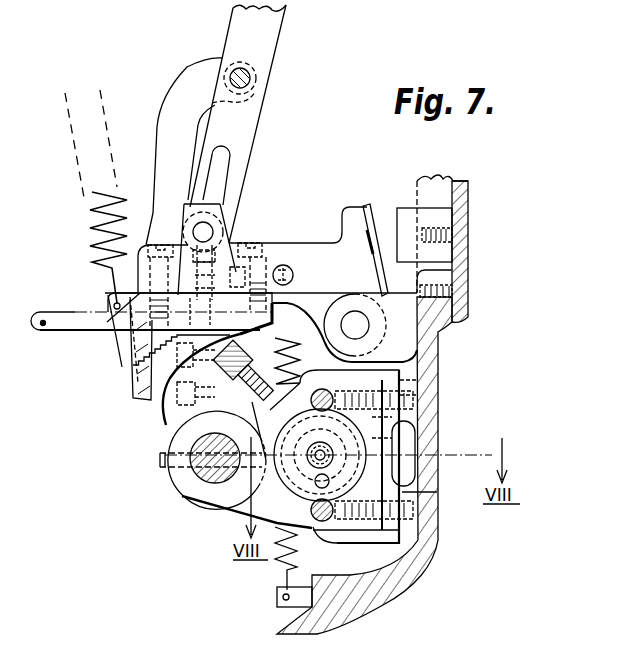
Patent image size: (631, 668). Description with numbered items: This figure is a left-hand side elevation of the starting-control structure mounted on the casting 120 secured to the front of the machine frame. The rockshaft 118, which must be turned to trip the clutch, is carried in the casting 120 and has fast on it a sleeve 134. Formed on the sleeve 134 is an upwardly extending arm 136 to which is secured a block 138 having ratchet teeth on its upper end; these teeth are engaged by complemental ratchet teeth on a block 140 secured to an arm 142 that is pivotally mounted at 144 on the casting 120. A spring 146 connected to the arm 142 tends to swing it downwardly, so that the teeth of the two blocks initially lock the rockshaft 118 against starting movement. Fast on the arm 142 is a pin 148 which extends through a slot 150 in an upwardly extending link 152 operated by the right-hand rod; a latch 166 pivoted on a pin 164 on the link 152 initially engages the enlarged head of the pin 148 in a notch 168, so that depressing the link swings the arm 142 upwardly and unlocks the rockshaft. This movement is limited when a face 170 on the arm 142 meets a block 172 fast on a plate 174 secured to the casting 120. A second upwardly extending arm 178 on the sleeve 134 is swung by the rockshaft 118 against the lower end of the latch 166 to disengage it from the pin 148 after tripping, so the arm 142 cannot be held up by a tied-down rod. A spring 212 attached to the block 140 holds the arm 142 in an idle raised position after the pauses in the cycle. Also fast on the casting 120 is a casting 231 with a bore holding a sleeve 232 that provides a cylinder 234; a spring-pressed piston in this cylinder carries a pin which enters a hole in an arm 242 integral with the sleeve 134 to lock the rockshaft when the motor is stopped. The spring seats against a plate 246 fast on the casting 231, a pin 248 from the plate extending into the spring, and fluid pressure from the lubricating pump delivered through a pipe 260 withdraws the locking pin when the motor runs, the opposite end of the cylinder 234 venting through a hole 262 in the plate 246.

The link 152 is at (270, 38).
The pin 164 is at (250, 78).
The latch 166 is at (172, 95).
The slot 150 is at (228, 168).
The notch 168 is at (177, 225).
The pin 148 is at (208, 232).
The arm 178 is at (247, 245).
The arm 142 is at (295, 247).
The face 170 is at (372, 203).
The block 172 is at (443, 217).
The plate 174 is at (468, 263).
The pivot 144 is at (352, 311).
The casting 120 is at (432, 357).
The spring 212 is at (92, 228).
The pipe 260 is at (60, 317).
The block 140 is at (122, 367).
The block 138 is at (165, 378).
The arm 136 is at (237, 330).
The cylinder 234 is at (423, 415).
The sleeve 232 is at (403, 438).
The plate 246 is at (380, 470).
The casting 231 is at (437, 492).
The rockshaft 118 is at (194, 468).
The sleeve 134 is at (193, 497).
The arm 242 is at (237, 515).
The pin 248 is at (315, 462).
The hole 262 is at (326, 488).
The spring 146 is at (283, 567).